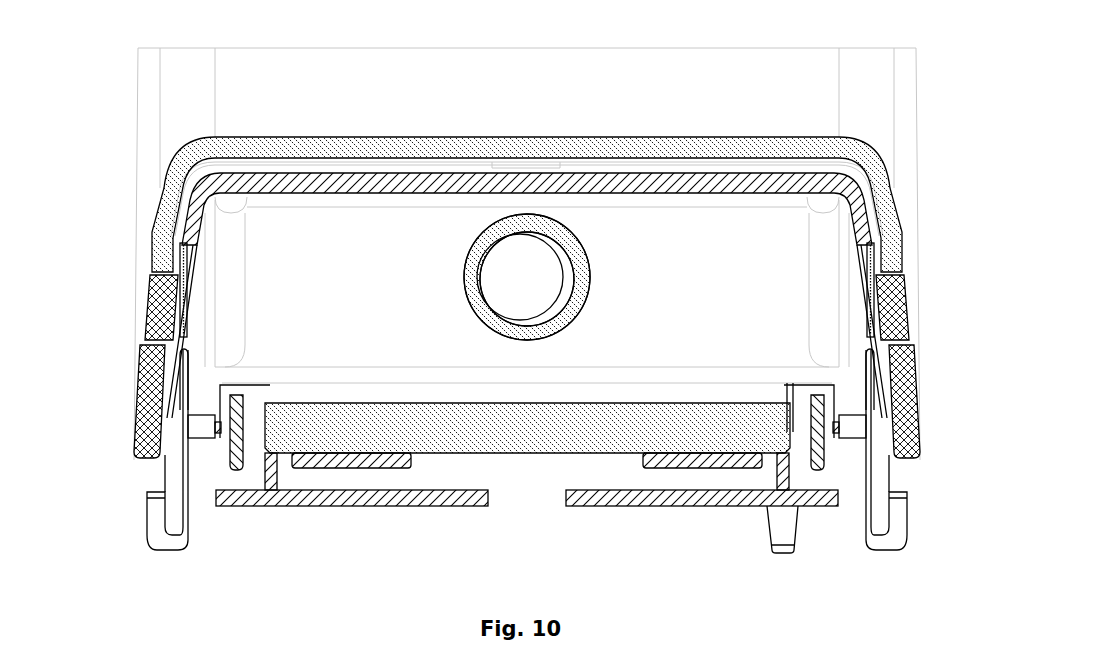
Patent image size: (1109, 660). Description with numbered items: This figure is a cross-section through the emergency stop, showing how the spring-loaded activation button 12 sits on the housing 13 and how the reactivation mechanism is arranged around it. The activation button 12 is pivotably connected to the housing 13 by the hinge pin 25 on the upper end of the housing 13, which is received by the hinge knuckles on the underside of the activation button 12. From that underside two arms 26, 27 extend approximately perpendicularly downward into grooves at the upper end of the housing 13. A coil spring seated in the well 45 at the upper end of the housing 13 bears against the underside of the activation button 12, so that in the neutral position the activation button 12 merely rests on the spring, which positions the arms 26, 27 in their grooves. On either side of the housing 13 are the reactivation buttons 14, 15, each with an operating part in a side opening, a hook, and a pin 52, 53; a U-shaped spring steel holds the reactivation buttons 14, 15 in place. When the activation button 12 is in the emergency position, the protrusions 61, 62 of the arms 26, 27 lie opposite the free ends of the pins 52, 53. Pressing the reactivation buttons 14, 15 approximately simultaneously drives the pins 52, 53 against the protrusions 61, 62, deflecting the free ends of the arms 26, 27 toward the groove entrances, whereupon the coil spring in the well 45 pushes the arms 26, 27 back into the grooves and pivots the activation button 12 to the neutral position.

The activation button 12 is at (208, 193).
The housing 13 is at (180, 168).
The reactivation button 14 is at (140, 348).
The reactivation button 15 is at (905, 392).
The hinge pin 25 is at (422, 433).
The arm 26 is at (238, 445).
The arm 27 is at (820, 463).
The well 45 is at (530, 340).
The pin 52 is at (207, 427).
The pin 53 is at (848, 427).
The protrusion 61 is at (222, 436).
The protrusion 62 is at (832, 436).